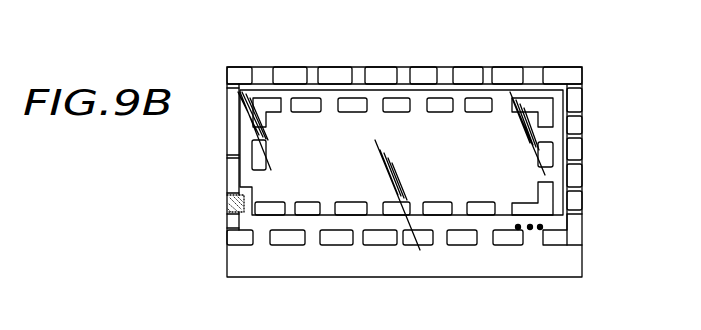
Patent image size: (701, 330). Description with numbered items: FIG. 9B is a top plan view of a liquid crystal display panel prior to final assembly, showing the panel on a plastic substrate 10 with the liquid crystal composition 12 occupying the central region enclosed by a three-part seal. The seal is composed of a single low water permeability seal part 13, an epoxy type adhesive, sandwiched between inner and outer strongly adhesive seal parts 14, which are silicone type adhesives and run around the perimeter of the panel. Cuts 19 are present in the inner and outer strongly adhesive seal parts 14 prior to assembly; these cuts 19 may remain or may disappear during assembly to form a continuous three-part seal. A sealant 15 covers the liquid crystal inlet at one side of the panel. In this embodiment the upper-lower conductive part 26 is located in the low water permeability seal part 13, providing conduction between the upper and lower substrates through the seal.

The plastic substrate 10 is at (575, 262).
The liquid crystal composition 12 is at (433, 127).
The low water permeability seal part 13 is at (562, 138).
The strongly adhesive seal part 14 is at (574, 78).
The sealant 15 is at (230, 207).
The cut 19 is at (232, 153).
The upper-lower conductive part 26 is at (536, 232).